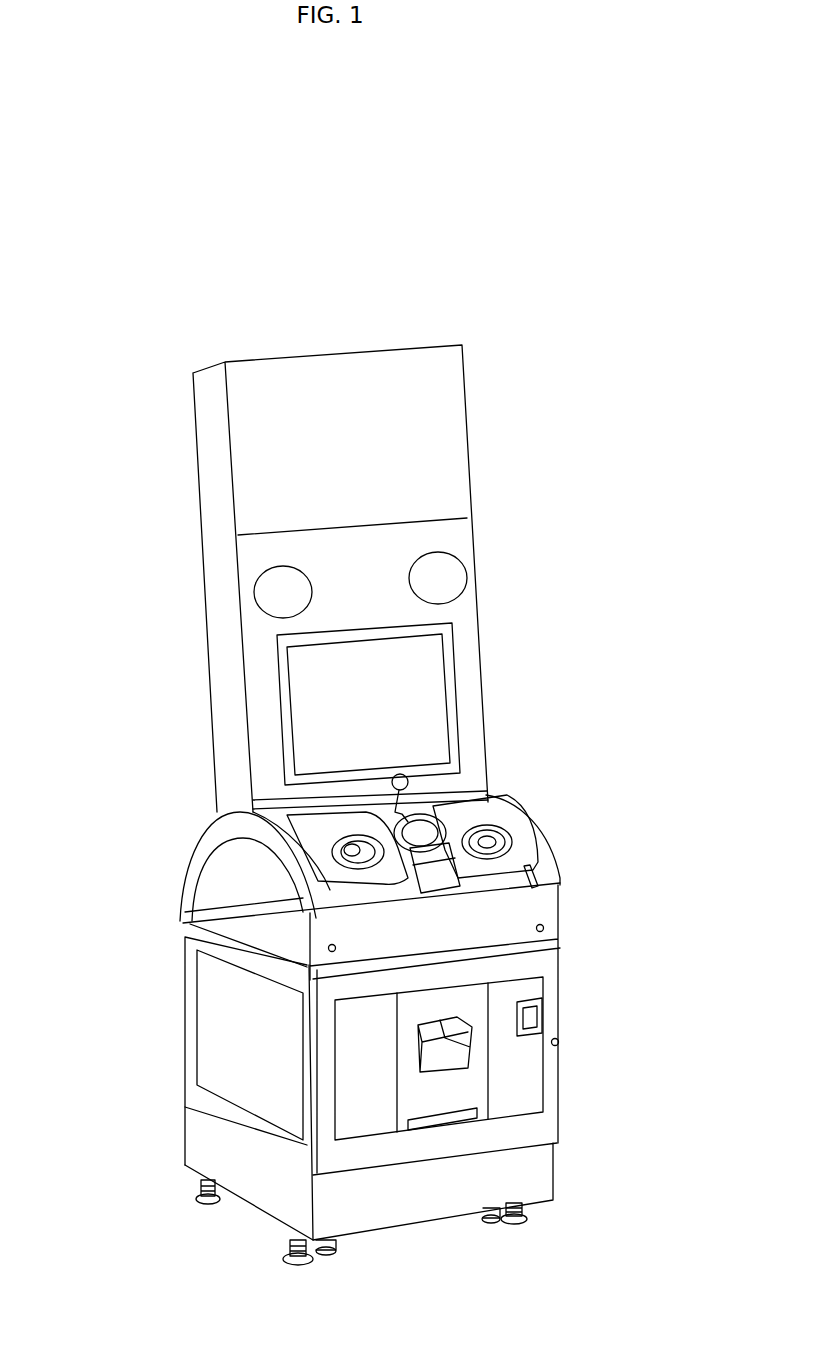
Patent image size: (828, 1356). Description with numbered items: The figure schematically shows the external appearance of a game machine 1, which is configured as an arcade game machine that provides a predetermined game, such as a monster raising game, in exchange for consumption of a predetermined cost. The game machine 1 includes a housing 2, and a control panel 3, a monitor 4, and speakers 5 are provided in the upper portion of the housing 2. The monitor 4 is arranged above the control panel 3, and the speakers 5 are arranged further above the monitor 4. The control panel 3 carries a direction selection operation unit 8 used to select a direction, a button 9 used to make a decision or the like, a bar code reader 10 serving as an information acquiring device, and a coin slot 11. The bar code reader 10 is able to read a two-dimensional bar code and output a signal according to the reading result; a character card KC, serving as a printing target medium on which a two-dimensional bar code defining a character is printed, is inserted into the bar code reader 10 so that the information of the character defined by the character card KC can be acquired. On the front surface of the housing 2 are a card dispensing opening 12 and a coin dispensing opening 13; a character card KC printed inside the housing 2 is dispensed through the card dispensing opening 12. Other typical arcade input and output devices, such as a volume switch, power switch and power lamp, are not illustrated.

The game machine 1 is at (122, 268).
The housing 2 is at (188, 938).
The control panel 3 is at (547, 808).
The monitor 4 is at (435, 678).
The speakers 5 is at (262, 590).
The direction selection operation unit 8 is at (405, 777).
The button 9 is at (350, 852).
The bar code reader 10 is at (452, 815).
The coin slot 11 is at (533, 872).
The card dispensing opening 12 is at (428, 1090).
The coin dispensing opening 13 is at (545, 1015).
The character card KC is at (403, 843).